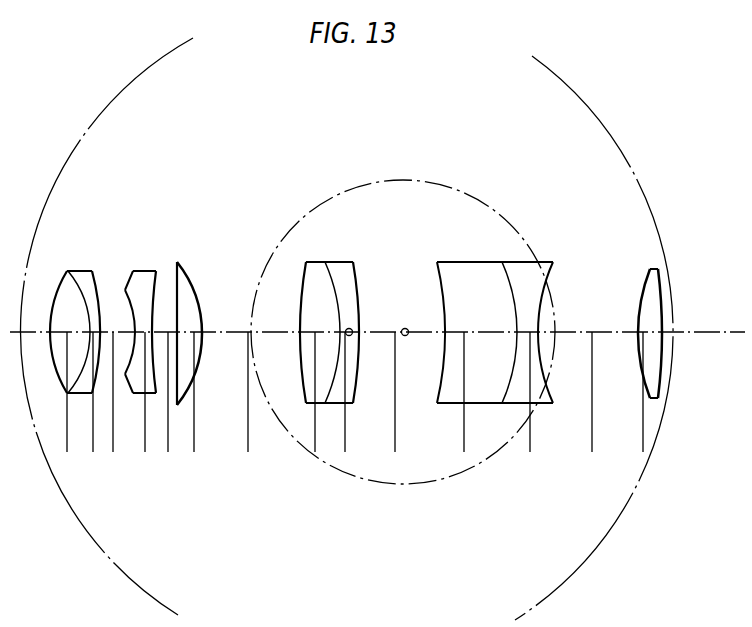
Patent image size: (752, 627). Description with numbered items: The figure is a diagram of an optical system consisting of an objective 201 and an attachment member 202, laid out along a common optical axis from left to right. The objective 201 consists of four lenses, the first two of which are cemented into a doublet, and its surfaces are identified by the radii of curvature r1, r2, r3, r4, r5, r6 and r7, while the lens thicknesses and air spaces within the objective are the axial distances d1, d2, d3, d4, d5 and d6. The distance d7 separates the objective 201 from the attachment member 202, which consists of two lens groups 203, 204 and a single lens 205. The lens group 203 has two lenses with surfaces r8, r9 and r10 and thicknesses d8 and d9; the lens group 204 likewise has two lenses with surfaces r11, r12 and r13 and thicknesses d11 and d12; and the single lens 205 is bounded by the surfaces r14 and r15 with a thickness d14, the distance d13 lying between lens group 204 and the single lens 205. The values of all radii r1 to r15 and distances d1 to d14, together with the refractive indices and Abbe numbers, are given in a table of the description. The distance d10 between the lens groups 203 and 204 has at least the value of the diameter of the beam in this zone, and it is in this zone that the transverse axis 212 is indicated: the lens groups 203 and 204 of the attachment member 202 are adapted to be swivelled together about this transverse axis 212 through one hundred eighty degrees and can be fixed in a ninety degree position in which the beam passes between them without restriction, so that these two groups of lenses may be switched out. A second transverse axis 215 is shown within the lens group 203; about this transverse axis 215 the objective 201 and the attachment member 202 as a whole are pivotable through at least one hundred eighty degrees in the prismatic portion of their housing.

The objective 201 is at (203, 203).
The attachment member 202 is at (292, 163).
The lens group 203 is at (290, 204).
The lens group 204 is at (428, 204).
The single lens 205 is at (653, 268).
The transverse axis 212 is at (407, 335).
The transverse axis 215 is at (352, 330).
The radius of curvature r1 is at (56, 296).
The radius of curvature r2 is at (78, 296).
The radius of curvature r3 is at (98, 296).
The radius of curvature r4 is at (126, 294).
The radius of curvature r5 is at (154, 296).
The radius of curvature r6 is at (176, 296).
The radius of curvature r7 is at (197, 296).
The radius of curvature r8 is at (302, 296).
The radius of curvature r9 is at (336, 296).
The radius of curvature r10 is at (358, 296).
The radius of curvature r11 is at (441, 296).
The radius of curvature r12 is at (509, 296).
The radius of curvature r13 is at (546, 296).
The radius of curvature r14 is at (641, 296).
The radius of curvature r15 is at (662, 296).
The axial distance d1 is at (69, 405).
The axial distance d2 is at (94, 405).
The axial distance d3 is at (115, 405).
The axial distance d4 is at (147, 405).
The axial distance d5 is at (171, 405).
The axial distance d6 is at (197, 405).
The axial distance d7 is at (250, 405).
The axial distance d8 is at (317, 405).
The axial distance d9 is at (347, 405).
The axial distance d10 is at (398, 405).
The axial distance d11 is at (467, 405).
The axial distance d12 is at (533, 405).
The axial distance d13 is at (595, 405).
The axial distance d14 is at (646, 405).